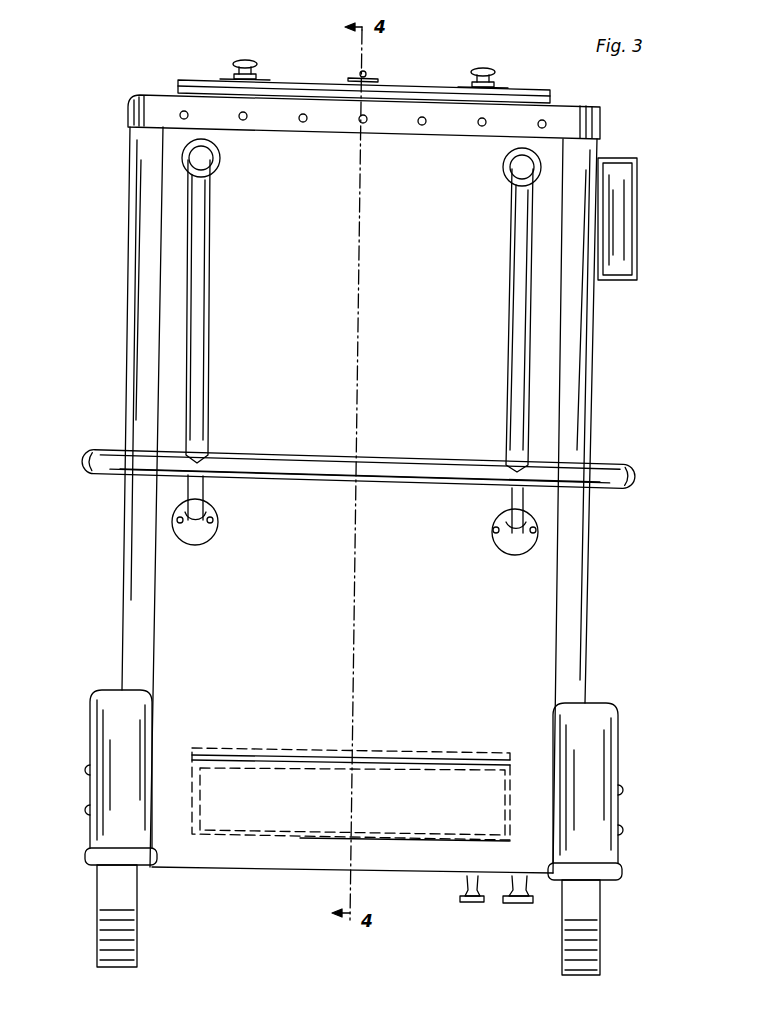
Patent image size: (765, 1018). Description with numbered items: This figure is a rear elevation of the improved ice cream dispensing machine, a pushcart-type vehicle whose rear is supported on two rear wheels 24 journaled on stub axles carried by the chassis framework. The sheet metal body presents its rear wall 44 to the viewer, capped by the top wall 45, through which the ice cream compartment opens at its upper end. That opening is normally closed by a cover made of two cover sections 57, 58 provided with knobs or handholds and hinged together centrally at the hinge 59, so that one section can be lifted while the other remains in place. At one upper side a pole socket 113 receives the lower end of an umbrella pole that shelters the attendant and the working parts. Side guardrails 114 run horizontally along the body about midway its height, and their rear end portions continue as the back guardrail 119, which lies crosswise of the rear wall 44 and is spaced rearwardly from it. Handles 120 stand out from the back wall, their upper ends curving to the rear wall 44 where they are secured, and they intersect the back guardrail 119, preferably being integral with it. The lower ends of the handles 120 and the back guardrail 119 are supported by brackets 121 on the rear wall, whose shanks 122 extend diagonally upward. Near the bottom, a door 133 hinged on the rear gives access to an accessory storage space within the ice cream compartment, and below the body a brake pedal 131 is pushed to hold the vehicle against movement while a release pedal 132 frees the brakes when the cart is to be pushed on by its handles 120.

The rear wheels 24 is at (115, 883).
The rear wall 44 is at (548, 328).
The top wall 45 is at (168, 105).
The cover section 57 is at (223, 82).
The cover section 58 is at (412, 88).
The hinge 59 is at (366, 72).
The pole socket 113 is at (620, 210).
The guardrails 114 is at (90, 455).
The back guardrail 119 is at (560, 473).
The handles 120 is at (197, 365).
The brackets 121 is at (185, 530).
The shanks 122 is at (190, 486).
The brake pedal 131 is at (465, 883).
The release pedal 132 is at (510, 902).
The door 133 is at (440, 820).